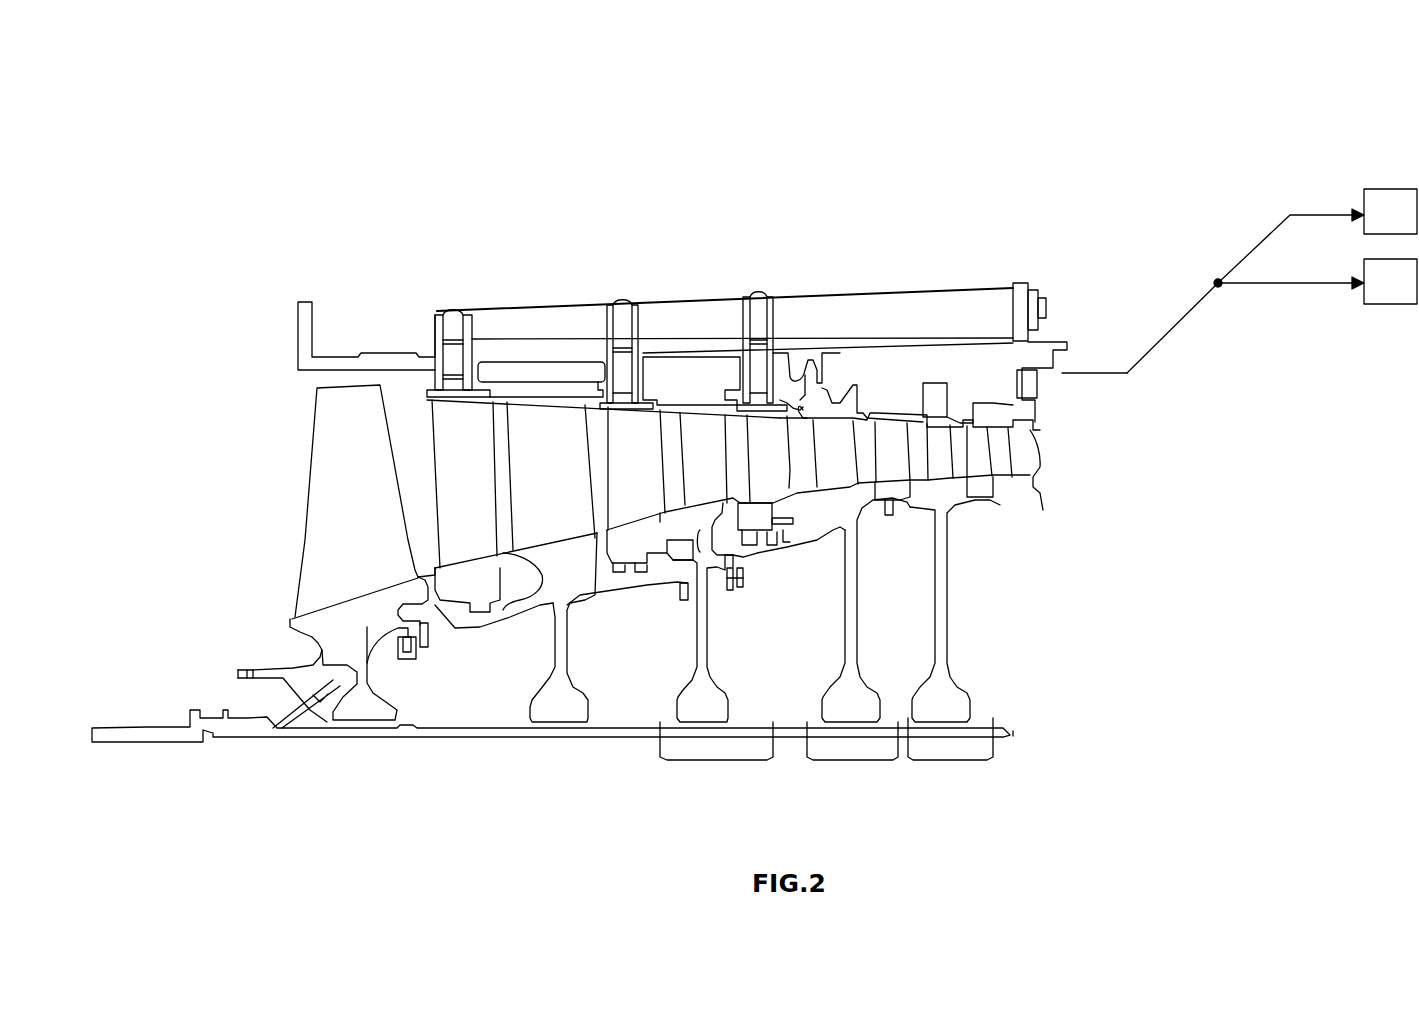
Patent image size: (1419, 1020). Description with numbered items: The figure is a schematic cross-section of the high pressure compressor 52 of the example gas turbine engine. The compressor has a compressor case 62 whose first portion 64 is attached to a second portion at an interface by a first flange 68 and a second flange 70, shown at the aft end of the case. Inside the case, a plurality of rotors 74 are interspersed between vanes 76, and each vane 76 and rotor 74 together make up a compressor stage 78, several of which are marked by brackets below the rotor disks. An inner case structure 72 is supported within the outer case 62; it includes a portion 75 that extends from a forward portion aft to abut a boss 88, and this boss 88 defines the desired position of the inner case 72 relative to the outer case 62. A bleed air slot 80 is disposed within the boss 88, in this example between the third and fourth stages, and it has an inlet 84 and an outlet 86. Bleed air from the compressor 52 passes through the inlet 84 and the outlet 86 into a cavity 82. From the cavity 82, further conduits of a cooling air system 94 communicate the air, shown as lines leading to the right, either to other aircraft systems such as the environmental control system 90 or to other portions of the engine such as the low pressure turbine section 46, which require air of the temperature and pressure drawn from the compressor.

The high pressure compressor 52 is at (1072, 93).
The compressor case 62 is at (760, 245).
The first portion 64 is at (929, 284).
The first flange 68 is at (966, 280).
The second flange 70 is at (1029, 312).
The inner case structure 72 is at (1062, 357).
The rotors 74 is at (340, 512).
The portion 75 is at (824, 410).
The vanes 76 is at (445, 470).
The compressor stage 78 is at (720, 762).
The bleed air slot 80 is at (797, 433).
The cavity 82 is at (905, 376).
The inlet 84 is at (806, 415).
The outlet 86 is at (814, 372).
The boss 88 is at (787, 401).
The environmental control system 90 is at (1365, 200).
The cooling air system 94 is at (1218, 280).
The low pressure turbine section 46 is at (1383, 305).